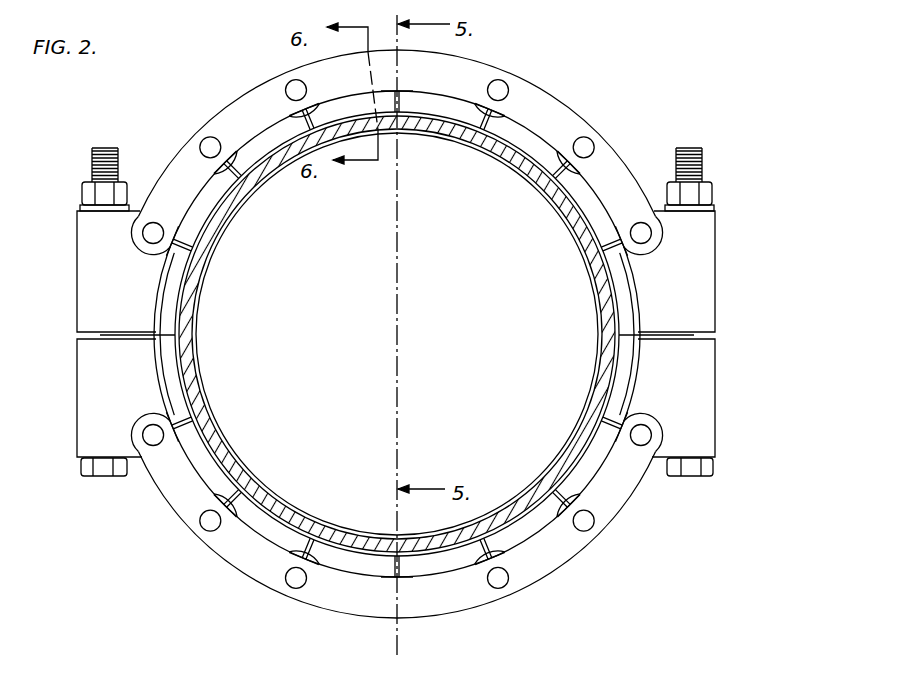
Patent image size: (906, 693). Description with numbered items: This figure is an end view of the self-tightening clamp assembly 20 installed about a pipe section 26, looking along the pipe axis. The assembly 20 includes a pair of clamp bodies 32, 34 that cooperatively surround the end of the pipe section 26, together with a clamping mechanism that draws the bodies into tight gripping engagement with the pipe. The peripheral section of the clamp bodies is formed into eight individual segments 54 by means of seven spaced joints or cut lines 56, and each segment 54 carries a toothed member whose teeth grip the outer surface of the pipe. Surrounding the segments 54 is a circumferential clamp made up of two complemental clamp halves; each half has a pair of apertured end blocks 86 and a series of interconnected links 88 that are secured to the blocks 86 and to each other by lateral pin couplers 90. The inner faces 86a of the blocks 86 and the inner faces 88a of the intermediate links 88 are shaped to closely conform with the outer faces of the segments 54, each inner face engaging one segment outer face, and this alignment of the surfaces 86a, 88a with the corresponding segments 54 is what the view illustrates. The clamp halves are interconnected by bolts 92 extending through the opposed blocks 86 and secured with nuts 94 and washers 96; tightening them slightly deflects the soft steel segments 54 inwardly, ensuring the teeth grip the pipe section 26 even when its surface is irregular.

The self-tightening clamp assembly 20 is at (652, 62).
The pipe section 26 is at (600, 395).
The clamp body 32 is at (532, 138).
The clamp body 34 is at (270, 535).
The segment 54 is at (583, 212).
The joint or cut line 56 is at (591, 254).
The end block 86 is at (95, 258).
The inner face of block 86a is at (627, 381).
The link 88 is at (265, 97).
The inner face of link 88a is at (530, 535).
The lateral pin coupler 90 is at (210, 146).
The bolt 92 is at (103, 470).
The nut 94 is at (85, 183).
The washer 96 is at (80, 206).